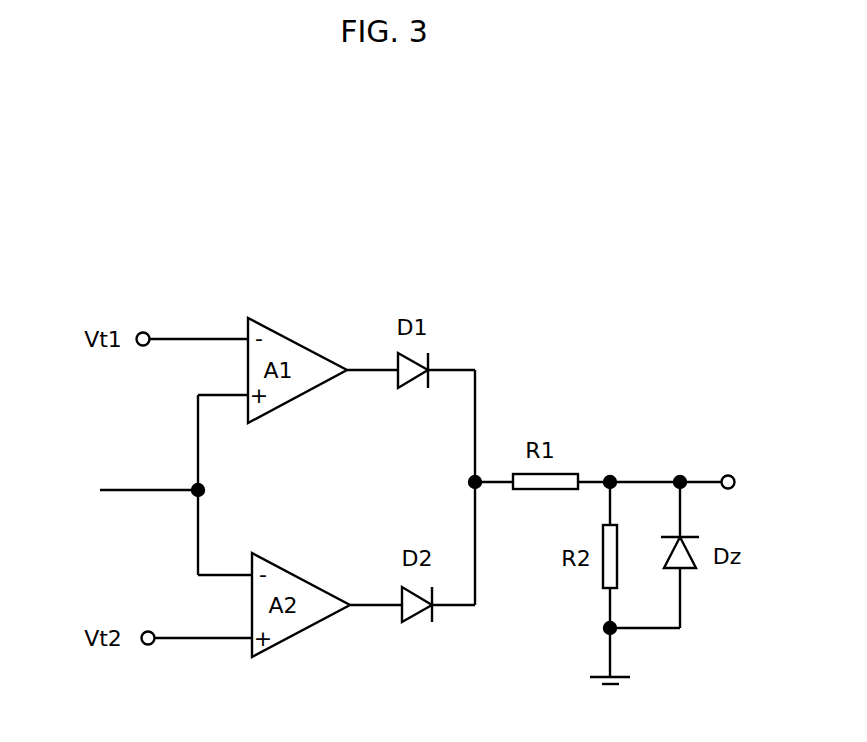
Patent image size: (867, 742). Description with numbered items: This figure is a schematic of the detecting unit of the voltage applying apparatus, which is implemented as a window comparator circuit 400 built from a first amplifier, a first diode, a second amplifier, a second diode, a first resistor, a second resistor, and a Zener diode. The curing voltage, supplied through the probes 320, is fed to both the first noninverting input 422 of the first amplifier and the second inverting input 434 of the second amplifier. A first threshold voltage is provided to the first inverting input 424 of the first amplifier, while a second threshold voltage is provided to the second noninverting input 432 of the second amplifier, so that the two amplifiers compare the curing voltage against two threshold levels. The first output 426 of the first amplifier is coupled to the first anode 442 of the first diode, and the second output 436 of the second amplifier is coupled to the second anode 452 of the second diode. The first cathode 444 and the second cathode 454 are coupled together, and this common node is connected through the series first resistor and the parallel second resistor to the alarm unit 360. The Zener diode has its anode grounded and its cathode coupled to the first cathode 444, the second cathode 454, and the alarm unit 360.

The window comparator circuit 400 is at (98, 162).
The probes 320 is at (125, 485).
The alarm unit 360 is at (736, 481).
The first inverting input 424 is at (247, 334).
The first noninverting input 422 is at (247, 403).
The first output 426 is at (347, 377).
The second inverting input 434 is at (251, 572).
The second noninverting input 432 is at (251, 643).
The second output 436 is at (350, 612).
The first anode 442 is at (393, 367).
The first cathode 444 is at (437, 367).
The second anode 452 is at (398, 602).
The second cathode 454 is at (436, 608).